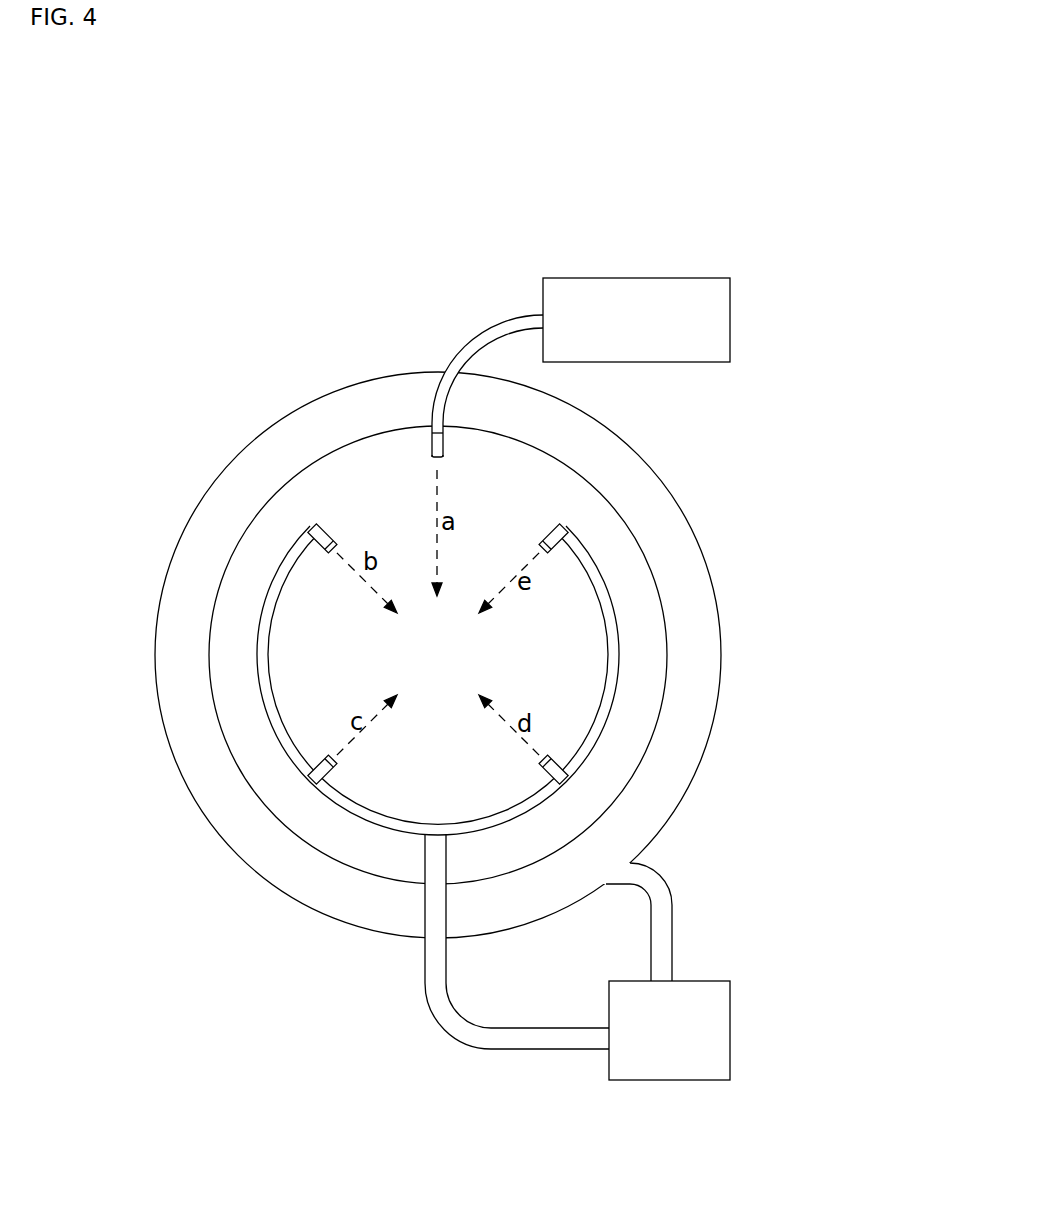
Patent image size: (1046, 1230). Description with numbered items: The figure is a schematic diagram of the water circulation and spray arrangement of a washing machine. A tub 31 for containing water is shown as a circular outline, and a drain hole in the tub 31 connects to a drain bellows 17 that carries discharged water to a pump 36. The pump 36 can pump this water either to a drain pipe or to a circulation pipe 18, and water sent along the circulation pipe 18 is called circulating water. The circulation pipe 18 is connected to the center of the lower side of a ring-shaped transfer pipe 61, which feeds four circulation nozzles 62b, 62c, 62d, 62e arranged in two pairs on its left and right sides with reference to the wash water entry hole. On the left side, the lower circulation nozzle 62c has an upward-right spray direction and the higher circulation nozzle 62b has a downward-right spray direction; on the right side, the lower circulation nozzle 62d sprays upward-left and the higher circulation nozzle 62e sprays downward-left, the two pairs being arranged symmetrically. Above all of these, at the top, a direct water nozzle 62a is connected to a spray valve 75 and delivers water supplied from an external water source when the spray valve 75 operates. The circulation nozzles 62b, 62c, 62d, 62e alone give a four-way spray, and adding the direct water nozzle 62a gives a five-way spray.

The tub 31 is at (698, 762).
The spray valve 75 is at (650, 277).
The circulation pipe 18 is at (433, 1011).
The drain bellows 17 is at (672, 915).
The pump 36 is at (730, 1007).
The transfer pipe 61 is at (513, 810).
The direct water nozzle 62a is at (440, 443).
The circulation nozzle 62b is at (320, 532).
The circulation nozzle 62c is at (327, 765).
The circulation nozzle 62d is at (543, 764).
The circulation nozzle 62e is at (547, 533).